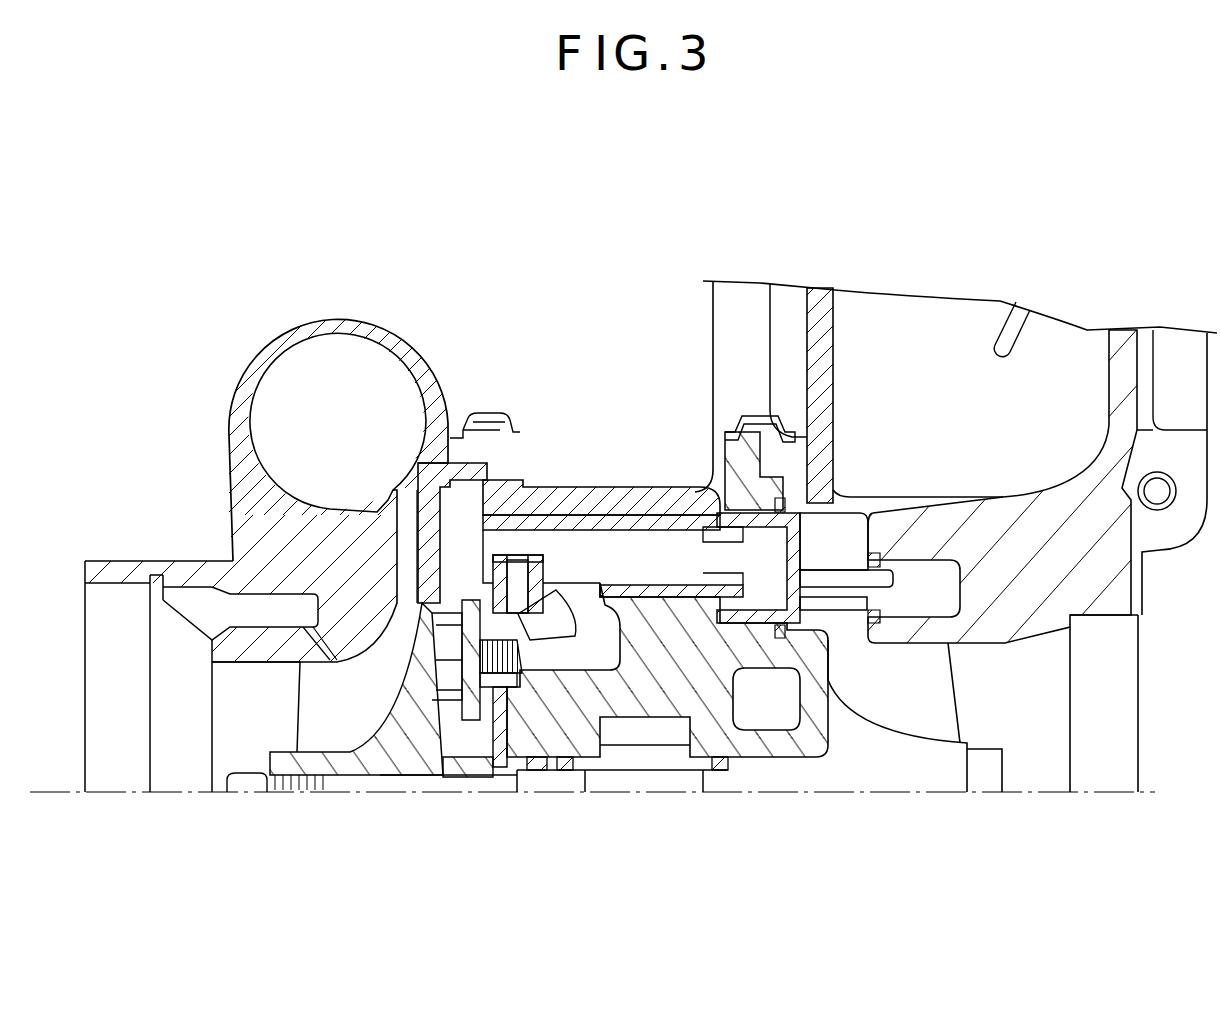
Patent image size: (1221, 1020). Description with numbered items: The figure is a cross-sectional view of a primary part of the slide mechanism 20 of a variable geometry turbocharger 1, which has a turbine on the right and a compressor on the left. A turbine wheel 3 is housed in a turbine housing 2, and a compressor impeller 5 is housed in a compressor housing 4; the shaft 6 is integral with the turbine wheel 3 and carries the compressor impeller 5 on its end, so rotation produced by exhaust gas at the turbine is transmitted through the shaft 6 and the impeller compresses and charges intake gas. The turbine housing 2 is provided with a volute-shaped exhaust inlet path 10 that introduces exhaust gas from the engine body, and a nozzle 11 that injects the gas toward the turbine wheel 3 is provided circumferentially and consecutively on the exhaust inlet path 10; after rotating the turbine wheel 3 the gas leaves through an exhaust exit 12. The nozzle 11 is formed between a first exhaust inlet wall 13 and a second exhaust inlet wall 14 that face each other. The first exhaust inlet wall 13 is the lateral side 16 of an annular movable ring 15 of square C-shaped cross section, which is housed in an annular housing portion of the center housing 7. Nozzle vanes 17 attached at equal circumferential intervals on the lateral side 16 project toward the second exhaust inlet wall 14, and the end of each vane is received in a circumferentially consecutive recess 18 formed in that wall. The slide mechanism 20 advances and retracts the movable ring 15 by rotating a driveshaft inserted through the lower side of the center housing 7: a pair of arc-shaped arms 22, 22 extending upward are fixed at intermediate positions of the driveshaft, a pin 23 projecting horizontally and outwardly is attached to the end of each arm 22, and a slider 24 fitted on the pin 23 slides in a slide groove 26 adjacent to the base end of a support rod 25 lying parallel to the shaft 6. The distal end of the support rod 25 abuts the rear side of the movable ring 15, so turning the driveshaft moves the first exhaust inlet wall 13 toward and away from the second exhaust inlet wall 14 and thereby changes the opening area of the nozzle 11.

The variable geometry turbocharger 1 is at (733, 223).
The turbine housing 2 is at (1172, 345).
The turbine wheel 3 is at (948, 690).
The compressor housing 4 is at (252, 357).
The compressor impeller 5 is at (305, 706).
The shaft 6 is at (660, 798).
The center housing 7 is at (580, 490).
The exhaust inlet path 10 is at (930, 346).
The nozzle 11 is at (843, 533).
The exhaust exit 12 is at (1128, 718).
The first exhaust inlet wall 13 is at (812, 520).
The second exhaust inlet wall 14 is at (903, 500).
The movable ring 15 is at (728, 505).
The lateral side 16 is at (800, 582).
The nozzle vanes 17 is at (882, 582).
The recess 18 is at (923, 598).
The slide mechanism 20 is at (477, 537).
The arc-shaped arms 22 is at (540, 630).
The pin 23 is at (510, 575).
The slider 24 is at (530, 566).
The support rod 25 is at (630, 543).
The slide groove 26 is at (518, 560).